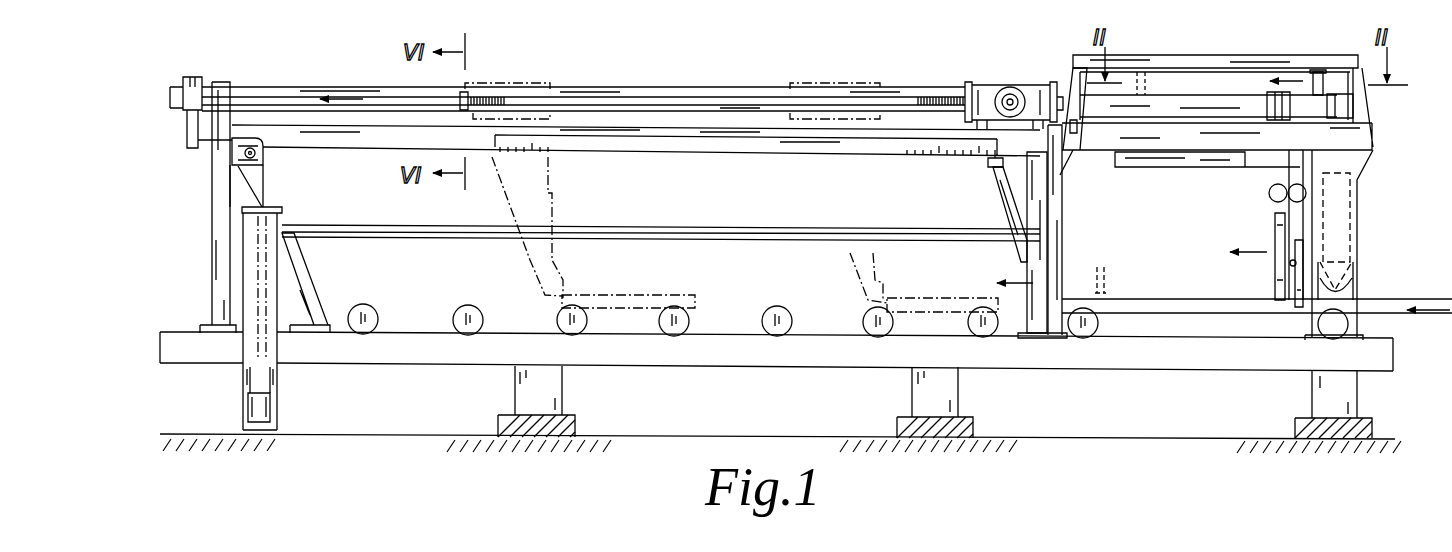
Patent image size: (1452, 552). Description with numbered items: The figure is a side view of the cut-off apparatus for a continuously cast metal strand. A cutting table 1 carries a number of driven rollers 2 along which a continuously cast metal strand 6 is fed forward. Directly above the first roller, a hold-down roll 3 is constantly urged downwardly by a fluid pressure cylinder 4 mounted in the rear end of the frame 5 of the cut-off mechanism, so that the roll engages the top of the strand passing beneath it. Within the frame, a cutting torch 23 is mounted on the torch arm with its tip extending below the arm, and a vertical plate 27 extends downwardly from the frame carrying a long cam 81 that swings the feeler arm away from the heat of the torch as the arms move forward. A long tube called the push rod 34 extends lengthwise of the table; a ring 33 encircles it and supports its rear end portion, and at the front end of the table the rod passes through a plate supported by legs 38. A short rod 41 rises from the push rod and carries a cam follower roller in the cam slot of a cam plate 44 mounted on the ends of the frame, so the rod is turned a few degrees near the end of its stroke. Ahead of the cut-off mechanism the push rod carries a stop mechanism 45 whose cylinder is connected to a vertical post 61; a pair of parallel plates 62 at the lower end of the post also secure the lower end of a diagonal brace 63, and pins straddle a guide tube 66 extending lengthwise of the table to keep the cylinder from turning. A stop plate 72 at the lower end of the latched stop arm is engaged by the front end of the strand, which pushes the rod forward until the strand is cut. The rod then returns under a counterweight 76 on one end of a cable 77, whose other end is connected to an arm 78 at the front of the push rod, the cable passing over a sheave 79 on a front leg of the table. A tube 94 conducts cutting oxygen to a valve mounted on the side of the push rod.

The cutting table 1 is at (990, 358).
The driven rollers 2 is at (793, 321).
The hold-down roll 3 is at (1352, 290).
The fluid pressure cylinder 4 is at (1348, 200).
The frame 5 is at (1374, 147).
The continuously cast metal strand 6 is at (1412, 314).
The cutting torch 23 is at (1278, 290).
The vertical plate 27 is at (1265, 164).
The ring 33 is at (1272, 90).
The push rod 34 is at (1178, 84).
The legs 38 is at (214, 235).
The short rod 41 is at (1317, 73).
The cam plate 44 is at (1212, 63).
The stop mechanism 45 is at (1004, 80).
The vertical post 61 is at (1050, 192).
The parallel plates 62 is at (1010, 214).
The diagonal brace 63 is at (990, 165).
The guide tube 66 is at (705, 231).
The stop plate 72 is at (1075, 288).
The counterweight 76 is at (250, 405).
The cable 77 is at (274, 376).
The arm 78 is at (186, 128).
The sheave 79 is at (268, 153).
The long cam 81 is at (1160, 166).
The tube 94 is at (1354, 101).